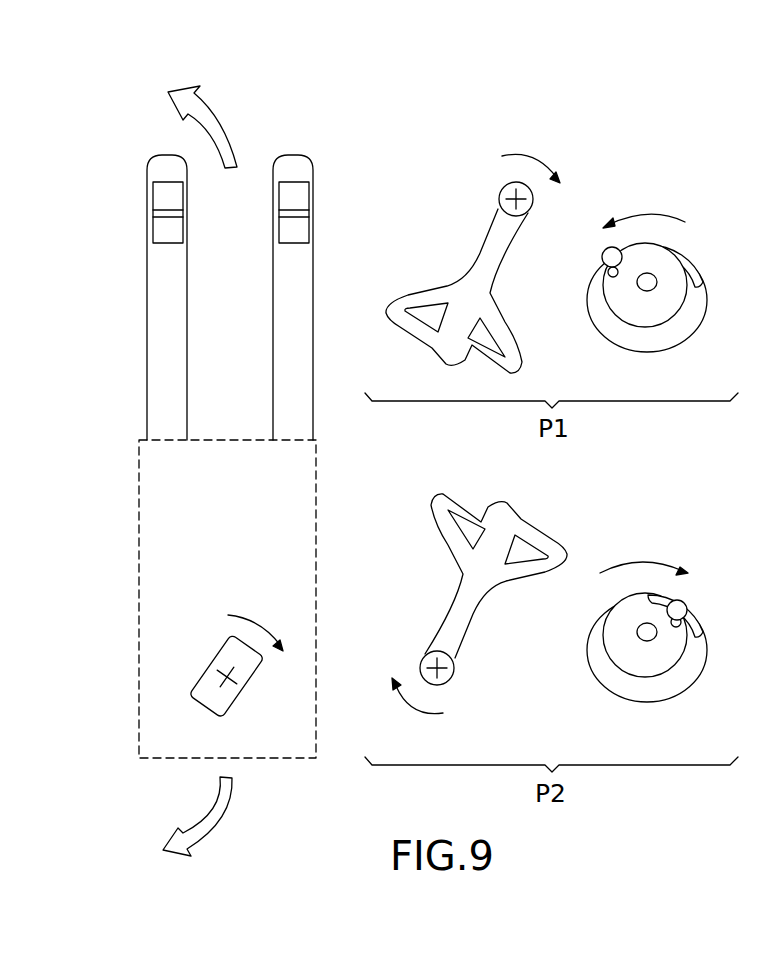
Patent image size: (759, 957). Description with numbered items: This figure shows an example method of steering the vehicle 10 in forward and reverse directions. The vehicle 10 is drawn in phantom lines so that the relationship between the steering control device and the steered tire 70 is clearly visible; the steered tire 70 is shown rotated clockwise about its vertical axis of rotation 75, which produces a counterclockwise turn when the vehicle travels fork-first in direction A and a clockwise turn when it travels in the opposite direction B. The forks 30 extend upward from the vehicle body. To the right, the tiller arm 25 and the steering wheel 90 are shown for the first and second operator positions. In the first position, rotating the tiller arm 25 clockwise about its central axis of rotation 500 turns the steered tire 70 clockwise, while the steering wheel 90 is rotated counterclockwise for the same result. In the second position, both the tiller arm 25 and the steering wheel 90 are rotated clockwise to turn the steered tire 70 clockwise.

The vehicle 10 is at (128, 323).
The arms 30 is at (273, 372).
The steered tire 70 is at (203, 671).
The vertical axis of rotation 75 is at (230, 683).
The tiller arm 25 is at (481, 256).
The central axis of rotation 500 is at (500, 199).
The steering wheel 90 is at (588, 298).